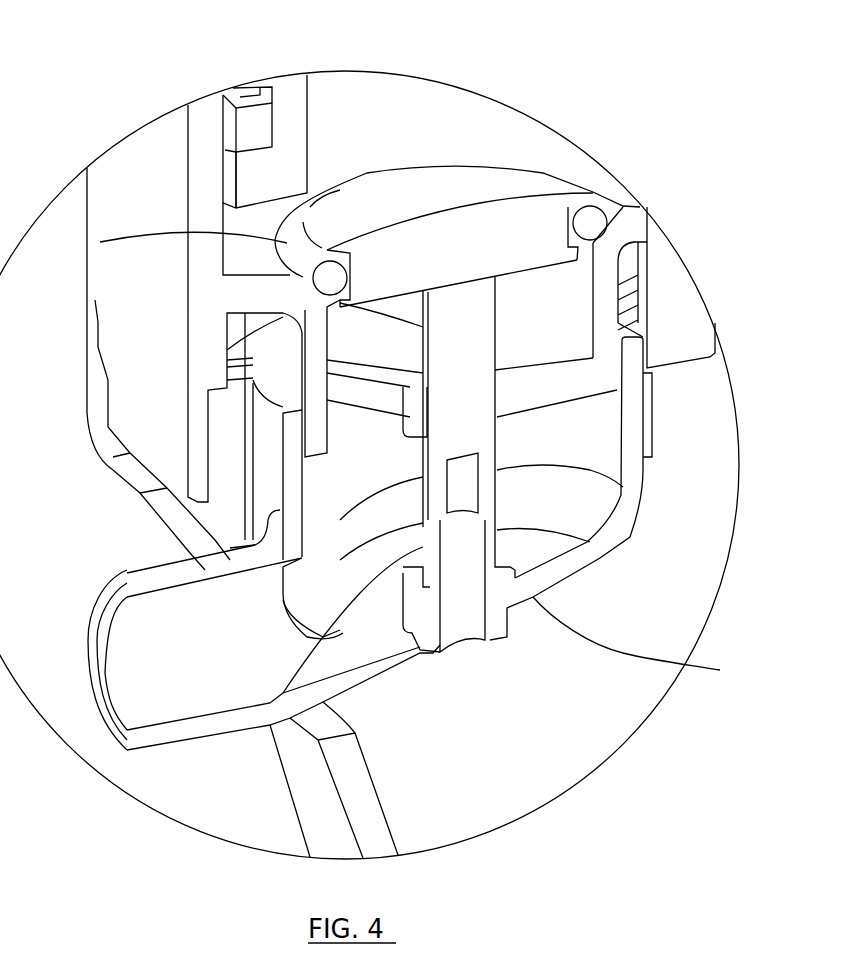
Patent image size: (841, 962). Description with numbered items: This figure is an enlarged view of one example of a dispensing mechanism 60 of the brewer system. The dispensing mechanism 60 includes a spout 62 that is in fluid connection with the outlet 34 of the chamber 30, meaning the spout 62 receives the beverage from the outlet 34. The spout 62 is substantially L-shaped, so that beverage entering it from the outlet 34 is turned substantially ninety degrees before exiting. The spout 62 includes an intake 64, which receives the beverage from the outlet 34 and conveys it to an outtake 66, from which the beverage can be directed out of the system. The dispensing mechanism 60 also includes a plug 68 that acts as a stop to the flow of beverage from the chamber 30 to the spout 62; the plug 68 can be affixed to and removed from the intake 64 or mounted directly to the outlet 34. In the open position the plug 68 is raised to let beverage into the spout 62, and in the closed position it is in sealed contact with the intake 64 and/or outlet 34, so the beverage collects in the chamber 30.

The chamber 30 is at (185, 148).
The outlet 34 is at (100, 242).
The dispensing mechanism 60 is at (687, 217).
The spout 62 is at (677, 665).
The intake 64 is at (376, 476).
The outtake 66 is at (208, 660).
The plug 68 is at (465, 192).